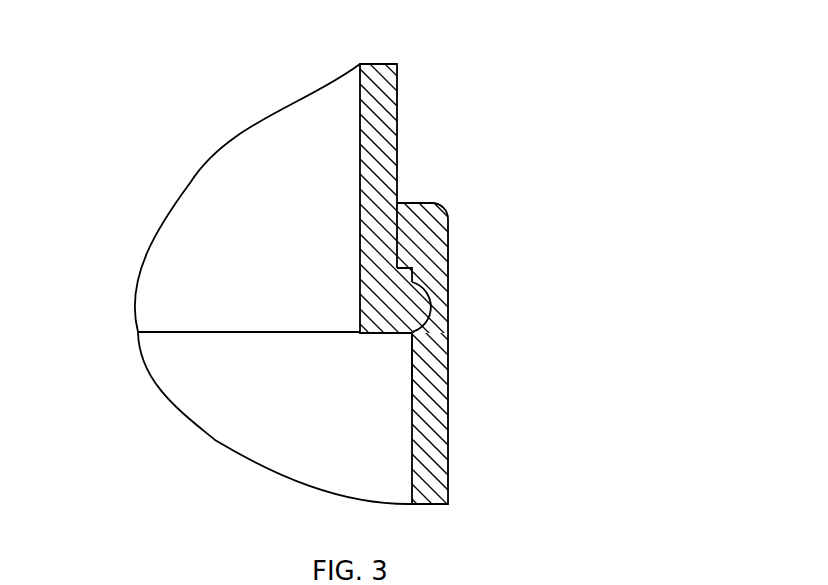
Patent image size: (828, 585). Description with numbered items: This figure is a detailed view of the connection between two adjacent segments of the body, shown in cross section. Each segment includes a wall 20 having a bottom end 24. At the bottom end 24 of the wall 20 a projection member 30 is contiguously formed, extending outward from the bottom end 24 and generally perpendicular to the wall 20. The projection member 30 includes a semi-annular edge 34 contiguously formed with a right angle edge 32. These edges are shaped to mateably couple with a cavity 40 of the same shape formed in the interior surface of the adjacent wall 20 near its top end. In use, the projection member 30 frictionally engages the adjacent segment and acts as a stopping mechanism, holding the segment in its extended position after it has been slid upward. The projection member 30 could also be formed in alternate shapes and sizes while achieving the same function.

The wall 20 is at (373, 140).
The bottom end 24 is at (336, 312).
The right angle edge 32 is at (414, 280).
The cavity 40 is at (425, 290).
The projection member 30 is at (407, 313).
The semi-annular edge 34 is at (422, 318).